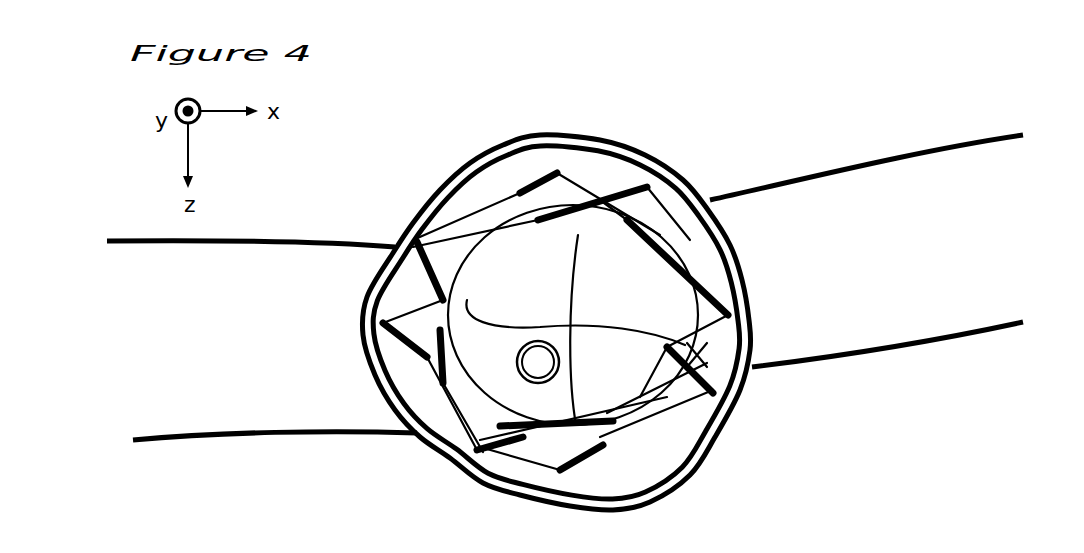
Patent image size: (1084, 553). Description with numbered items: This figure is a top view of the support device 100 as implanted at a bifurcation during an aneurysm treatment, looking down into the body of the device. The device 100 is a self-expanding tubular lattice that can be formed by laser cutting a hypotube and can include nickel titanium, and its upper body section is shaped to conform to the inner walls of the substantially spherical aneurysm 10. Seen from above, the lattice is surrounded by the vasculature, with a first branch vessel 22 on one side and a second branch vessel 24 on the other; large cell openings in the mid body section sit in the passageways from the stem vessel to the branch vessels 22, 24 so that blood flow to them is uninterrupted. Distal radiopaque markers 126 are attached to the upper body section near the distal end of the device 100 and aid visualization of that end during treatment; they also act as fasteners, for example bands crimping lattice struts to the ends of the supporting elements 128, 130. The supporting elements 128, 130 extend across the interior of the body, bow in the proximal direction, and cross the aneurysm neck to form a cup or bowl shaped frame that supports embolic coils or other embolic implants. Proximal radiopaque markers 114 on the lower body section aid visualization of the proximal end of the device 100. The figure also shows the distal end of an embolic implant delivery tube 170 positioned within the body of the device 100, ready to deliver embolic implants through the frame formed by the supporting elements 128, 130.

The aneurysm 10 is at (678, 183).
The first branch vessel 22 is at (229, 345).
The second branch vessel 24 is at (909, 276).
The support device 100 is at (467, 206).
The proximal radiopaque markers 114 is at (437, 232).
The distal radiopaque markers 126 is at (573, 180).
The supporting element 128 is at (468, 300).
The supporting element 130 is at (576, 255).
The embolic implant delivery tube 170 is at (527, 380).